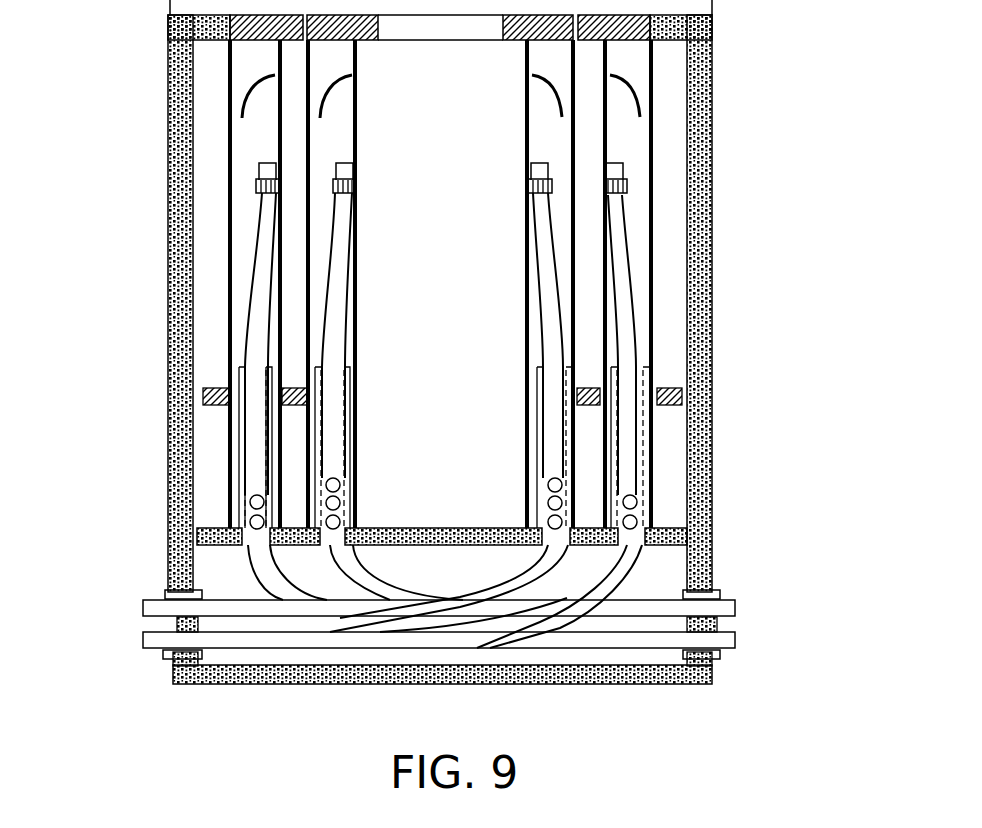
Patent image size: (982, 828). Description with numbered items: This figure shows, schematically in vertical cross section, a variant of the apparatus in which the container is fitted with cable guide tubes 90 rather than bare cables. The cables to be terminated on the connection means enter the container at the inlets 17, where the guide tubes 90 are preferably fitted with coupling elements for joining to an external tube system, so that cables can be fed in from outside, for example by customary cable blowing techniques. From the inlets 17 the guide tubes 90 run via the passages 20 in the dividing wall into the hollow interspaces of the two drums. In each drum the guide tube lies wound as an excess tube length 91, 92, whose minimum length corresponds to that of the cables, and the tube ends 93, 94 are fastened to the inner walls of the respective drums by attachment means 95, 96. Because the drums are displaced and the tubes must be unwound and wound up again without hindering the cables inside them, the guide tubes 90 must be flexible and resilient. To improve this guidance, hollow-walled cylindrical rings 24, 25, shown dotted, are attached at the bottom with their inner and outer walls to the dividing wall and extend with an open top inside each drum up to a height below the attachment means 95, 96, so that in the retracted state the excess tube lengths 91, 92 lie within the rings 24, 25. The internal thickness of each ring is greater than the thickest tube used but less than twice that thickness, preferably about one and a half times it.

The inlet 17 is at (720, 592).
The passage 20 is at (243, 523).
The hollow-walled cylindrical ring 24 is at (645, 423).
The hollow-walled cylindrical ring 25 is at (530, 418).
The cable guide tube 90 is at (395, 640).
The excess tube length 91 is at (633, 503).
The excess tube length 92 is at (545, 497).
The tube end 93 is at (628, 292).
The tube end 94 is at (543, 290).
The attachment means 95 is at (628, 183).
The attachment means 96 is at (530, 183).